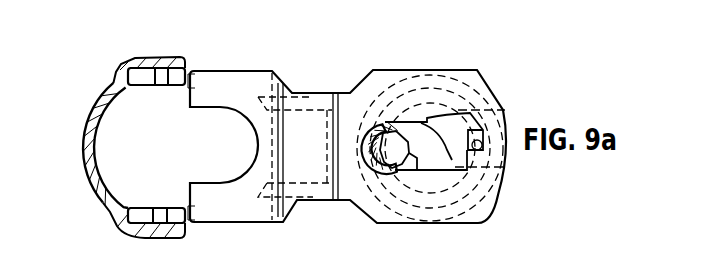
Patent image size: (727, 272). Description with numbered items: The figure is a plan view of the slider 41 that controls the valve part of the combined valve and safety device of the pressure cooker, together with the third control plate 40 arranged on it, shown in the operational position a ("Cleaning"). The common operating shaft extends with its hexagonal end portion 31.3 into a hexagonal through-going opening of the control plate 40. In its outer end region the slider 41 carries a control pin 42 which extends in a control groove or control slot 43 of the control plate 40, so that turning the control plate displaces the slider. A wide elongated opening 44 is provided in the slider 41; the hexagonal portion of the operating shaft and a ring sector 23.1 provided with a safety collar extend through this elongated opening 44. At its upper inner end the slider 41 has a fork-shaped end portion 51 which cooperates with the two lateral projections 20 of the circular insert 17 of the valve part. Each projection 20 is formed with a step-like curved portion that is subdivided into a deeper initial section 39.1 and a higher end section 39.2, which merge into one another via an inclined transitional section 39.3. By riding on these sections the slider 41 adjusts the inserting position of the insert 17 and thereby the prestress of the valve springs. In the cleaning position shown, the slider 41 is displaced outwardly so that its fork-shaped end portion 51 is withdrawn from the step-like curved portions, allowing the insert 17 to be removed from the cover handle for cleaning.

The insert 17 is at (107, 100).
The projections 20 is at (170, 62).
The deeper initial section 39.1 is at (178, 208).
The higher end section 39.2 is at (142, 208).
The inclined transitional section 39.3 is at (160, 72).
The upper inner fork-shaped end portion 51 is at (226, 80).
The ring sector 23.1 is at (371, 128).
The slider 41 is at (355, 100).
The hexagonal end portion 31.3 is at (390, 172).
The third control plate 40 is at (398, 95).
The control pin 42 is at (507, 130).
The control slot 43 is at (423, 95).
The elongated opening 44 is at (452, 160).